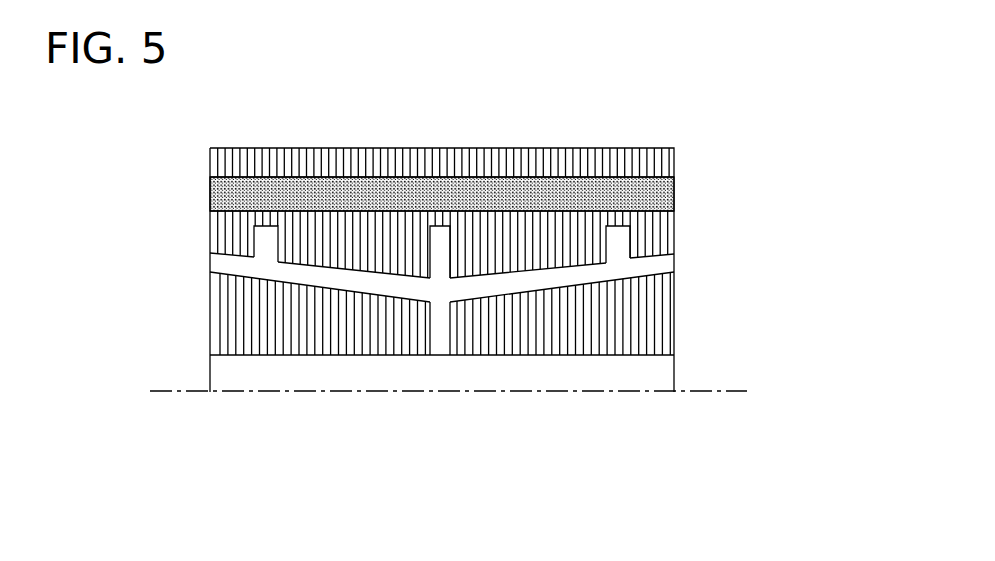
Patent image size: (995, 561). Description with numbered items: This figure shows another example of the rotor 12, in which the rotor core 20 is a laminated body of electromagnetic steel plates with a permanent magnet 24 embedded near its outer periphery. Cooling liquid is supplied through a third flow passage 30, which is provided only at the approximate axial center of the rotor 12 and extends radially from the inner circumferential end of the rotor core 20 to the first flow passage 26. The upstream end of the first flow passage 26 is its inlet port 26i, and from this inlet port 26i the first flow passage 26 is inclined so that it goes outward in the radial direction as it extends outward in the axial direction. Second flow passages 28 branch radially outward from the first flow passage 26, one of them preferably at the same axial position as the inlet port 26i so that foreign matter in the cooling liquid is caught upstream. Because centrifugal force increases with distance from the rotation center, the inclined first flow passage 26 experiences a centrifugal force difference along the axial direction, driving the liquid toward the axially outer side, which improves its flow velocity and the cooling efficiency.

The rotor 12 is at (576, 91).
The rotor core 20 is at (660, 322).
The permanent magnet 24 is at (212, 198).
The first flow passage 26 is at (660, 262).
The inlet port 26i is at (438, 307).
The second flow passage 28 is at (266, 237).
The third flow passage 30 is at (437, 338).